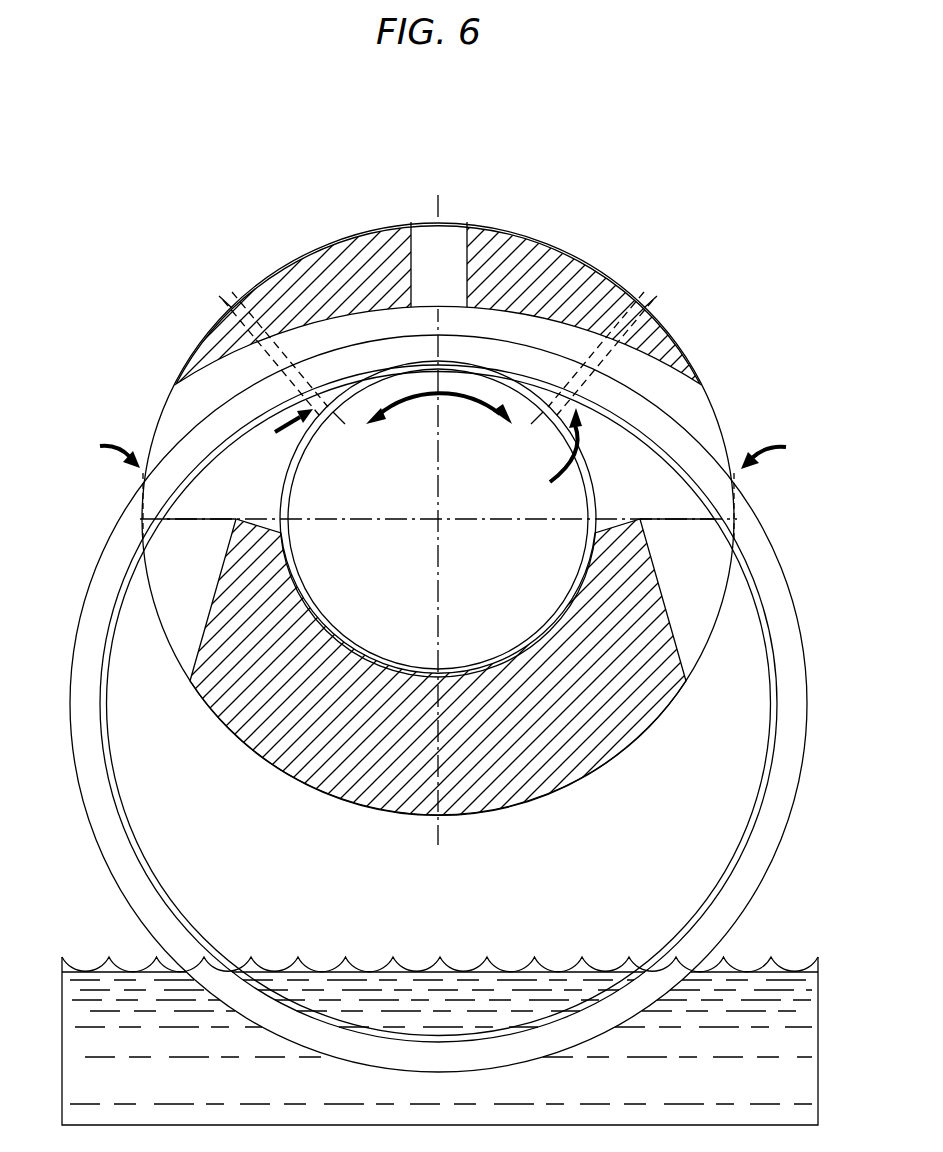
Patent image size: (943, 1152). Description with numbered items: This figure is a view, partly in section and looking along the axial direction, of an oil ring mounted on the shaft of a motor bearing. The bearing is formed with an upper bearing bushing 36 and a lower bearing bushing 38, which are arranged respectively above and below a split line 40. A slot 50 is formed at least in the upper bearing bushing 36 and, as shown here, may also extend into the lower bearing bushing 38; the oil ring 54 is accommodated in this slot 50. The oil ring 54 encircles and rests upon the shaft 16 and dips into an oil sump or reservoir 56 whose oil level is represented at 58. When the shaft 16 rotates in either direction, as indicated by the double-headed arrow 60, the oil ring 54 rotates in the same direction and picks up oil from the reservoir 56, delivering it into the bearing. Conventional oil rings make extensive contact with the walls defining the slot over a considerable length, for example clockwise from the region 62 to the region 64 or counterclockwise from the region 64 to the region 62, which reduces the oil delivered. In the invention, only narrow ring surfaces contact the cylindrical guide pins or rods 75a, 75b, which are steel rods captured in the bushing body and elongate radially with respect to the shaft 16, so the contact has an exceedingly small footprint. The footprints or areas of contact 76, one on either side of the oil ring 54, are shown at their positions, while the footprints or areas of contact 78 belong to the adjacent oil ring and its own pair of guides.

The shaft 16 is at (591, 482).
The upper bearing bushing 36 is at (330, 243).
The lower bearing bushing 38 is at (382, 812).
The split line 40 is at (205, 522).
The slot 50 is at (170, 415).
The oil ring 54 is at (112, 557).
The oil sump or reservoir 56 is at (820, 1031).
The oil level 58 is at (103, 968).
The double-headed arrow 60 is at (408, 410).
The region 62 is at (104, 487).
The region 64 is at (777, 488).
The guide pin or rod 75a is at (312, 368).
The guide pin or rod 75b is at (558, 368).
The footprints or areas of contact 76 is at (283, 435).
The footprints or areas of contact 78 is at (549, 455).